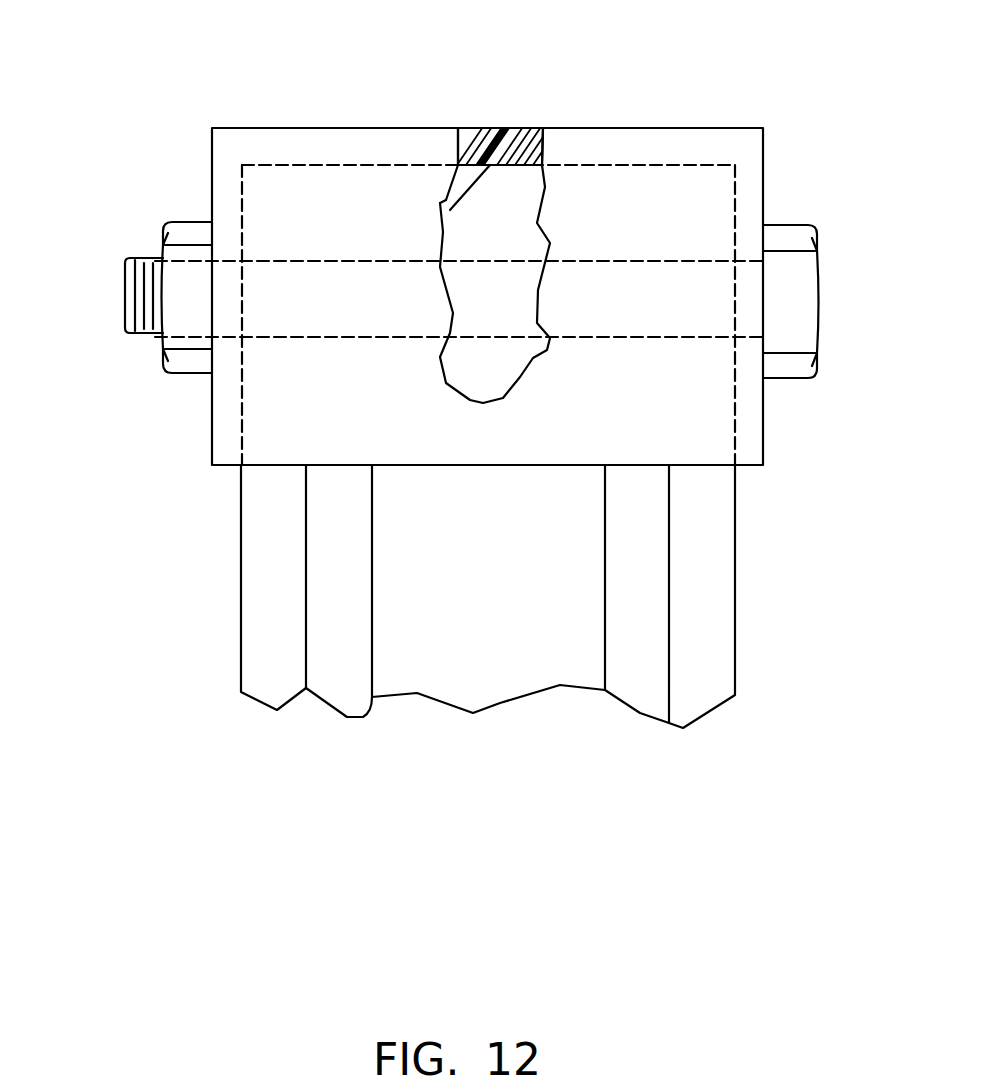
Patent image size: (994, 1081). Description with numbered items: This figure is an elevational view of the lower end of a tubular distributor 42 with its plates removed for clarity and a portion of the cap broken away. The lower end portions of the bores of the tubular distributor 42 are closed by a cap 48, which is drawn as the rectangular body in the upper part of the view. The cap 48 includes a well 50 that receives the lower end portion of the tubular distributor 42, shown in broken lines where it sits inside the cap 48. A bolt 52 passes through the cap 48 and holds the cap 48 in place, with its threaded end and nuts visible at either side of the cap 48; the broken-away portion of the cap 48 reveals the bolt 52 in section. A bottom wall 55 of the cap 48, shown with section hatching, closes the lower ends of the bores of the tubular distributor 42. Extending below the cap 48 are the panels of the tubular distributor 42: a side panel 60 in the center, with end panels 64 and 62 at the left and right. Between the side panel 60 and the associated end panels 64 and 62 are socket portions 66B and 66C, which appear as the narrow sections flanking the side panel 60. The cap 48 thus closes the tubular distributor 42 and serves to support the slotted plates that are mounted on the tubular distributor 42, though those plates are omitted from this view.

The tubular distributor 42 is at (240, 587).
The cap 48 is at (230, 183).
The well 50 is at (444, 202).
The bolt 52 is at (143, 262).
The bottom wall 55 is at (532, 128).
The side panel 60 is at (513, 578).
The end panel 62 is at (735, 550).
The end panel 64 is at (240, 667).
The socket portion 66B is at (342, 655).
The socket portion 66C is at (633, 605).